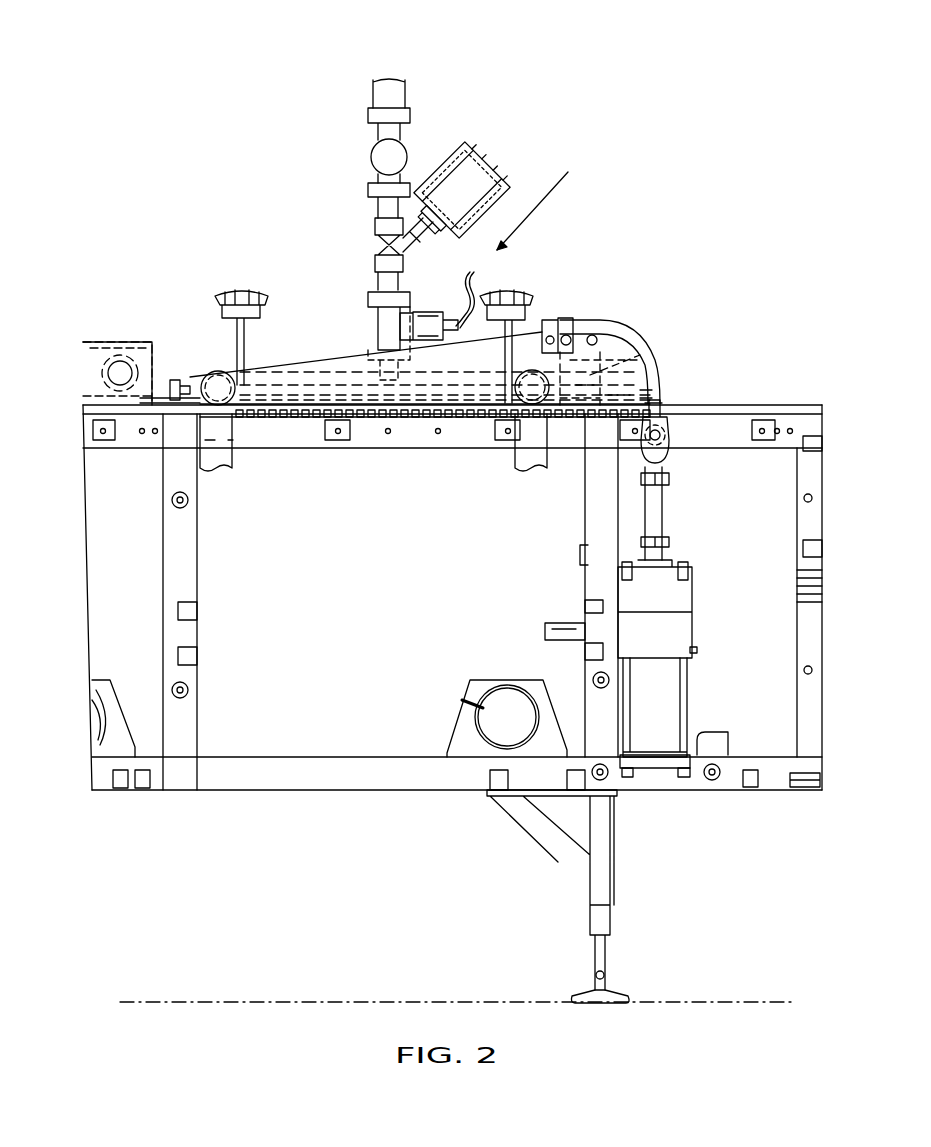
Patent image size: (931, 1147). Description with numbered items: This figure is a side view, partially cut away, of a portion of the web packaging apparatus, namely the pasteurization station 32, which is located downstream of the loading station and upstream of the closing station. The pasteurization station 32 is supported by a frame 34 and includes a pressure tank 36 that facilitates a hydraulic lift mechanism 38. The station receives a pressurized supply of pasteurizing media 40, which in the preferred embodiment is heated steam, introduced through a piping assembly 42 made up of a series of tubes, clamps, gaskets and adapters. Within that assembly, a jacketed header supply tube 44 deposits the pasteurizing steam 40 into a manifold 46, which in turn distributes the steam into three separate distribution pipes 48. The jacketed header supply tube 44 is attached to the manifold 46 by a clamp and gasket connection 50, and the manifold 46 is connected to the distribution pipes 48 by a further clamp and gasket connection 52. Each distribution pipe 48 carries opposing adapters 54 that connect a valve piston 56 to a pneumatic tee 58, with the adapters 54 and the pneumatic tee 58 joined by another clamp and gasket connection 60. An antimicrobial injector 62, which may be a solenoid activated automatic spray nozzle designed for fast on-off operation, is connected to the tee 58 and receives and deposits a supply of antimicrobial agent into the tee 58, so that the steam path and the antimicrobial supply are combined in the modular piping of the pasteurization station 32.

The pasteurization station 32 is at (146, 836).
The frame 34 is at (370, 788).
The pressure tank 36 is at (667, 713).
The hydraulic lift mechanism 38 is at (643, 328).
The pasteurizing media 40 is at (390, 70).
The piping assembly 42 is at (313, 162).
The jacketed header supply tube 44 is at (402, 98).
The manifold 46 is at (407, 155).
The distribution pipes 48 is at (316, 240).
The clamp and gasket connection 50 is at (370, 115).
The clamp and gasket connection 52 is at (370, 192).
The opposing adapters 54 is at (377, 208).
The valve piston 56 is at (450, 203).
The pneumatic tee 58 is at (382, 333).
The clamp and gasket connection 60 is at (410, 298).
The antimicrobial injector 62 is at (430, 340).